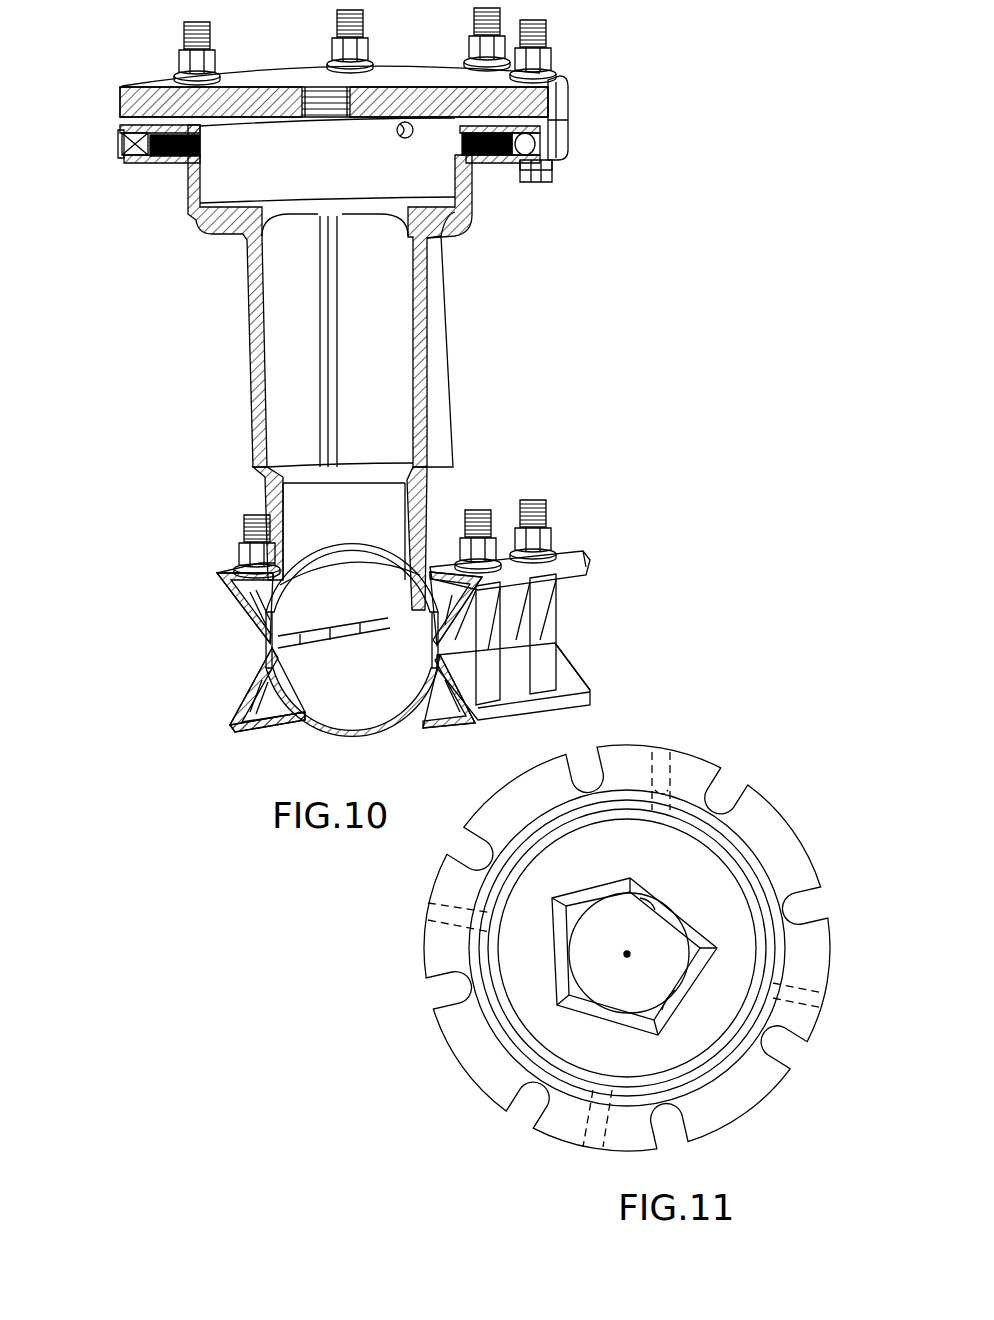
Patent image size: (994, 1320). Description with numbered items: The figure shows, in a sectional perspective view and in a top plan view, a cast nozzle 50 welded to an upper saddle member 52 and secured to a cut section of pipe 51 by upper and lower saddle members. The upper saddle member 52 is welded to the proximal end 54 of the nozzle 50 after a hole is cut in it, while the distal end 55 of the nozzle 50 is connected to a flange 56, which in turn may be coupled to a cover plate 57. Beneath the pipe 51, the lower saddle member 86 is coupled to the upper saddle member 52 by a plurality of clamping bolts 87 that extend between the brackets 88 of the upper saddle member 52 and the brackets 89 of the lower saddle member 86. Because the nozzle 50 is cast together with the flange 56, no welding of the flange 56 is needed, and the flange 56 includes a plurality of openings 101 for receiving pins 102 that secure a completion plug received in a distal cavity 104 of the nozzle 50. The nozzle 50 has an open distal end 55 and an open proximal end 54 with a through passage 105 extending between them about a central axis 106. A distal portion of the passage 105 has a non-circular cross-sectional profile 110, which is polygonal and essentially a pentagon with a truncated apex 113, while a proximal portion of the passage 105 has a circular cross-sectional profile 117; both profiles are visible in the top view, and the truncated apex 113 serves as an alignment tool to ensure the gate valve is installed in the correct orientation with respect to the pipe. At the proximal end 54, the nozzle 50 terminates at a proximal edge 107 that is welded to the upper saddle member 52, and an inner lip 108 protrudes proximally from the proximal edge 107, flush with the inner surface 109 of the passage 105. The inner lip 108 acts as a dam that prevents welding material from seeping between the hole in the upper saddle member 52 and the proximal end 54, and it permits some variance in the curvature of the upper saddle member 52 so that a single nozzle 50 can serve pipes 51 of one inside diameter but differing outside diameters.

In FIG. 10, the nozzle 50 is at (233, 318).
In FIG. 11, the nozzle 50 is at (388, 1100).
In FIG. 10, the pipe 51 is at (330, 726).
In FIG. 10, the upper saddle member 52 is at (450, 540).
In FIG. 10, the proximal end 54 is at (425, 512).
In FIG. 10, the distal end 55 is at (250, 232).
In FIG. 10, the flange 56 is at (568, 97).
In FIG. 11, the flange 56 is at (783, 863).
In FIG. 10, the cover plate 57 is at (392, 72).
In FIG. 10, the lower saddle member 86 is at (438, 700).
In FIG. 10, the clamping bolts 87 is at (533, 633).
In FIG. 10, the brackets 88 is at (585, 566).
In FIG. 10, the brackets 89 is at (587, 710).
In FIG. 10, the openings 101 is at (125, 140).
In FIG. 11, the openings 101 is at (680, 772).
In FIG. 10, the pins 102 is at (160, 160).
In FIG. 10, the distal cavity 104 is at (257, 153).
In FIG. 10, the passage 105 is at (345, 353).
In FIG. 11, the passage 105 is at (600, 932).
In FIG. 11, the central axis 106 is at (627, 954).
In FIG. 10, the proximal edge 107 is at (420, 622).
In FIG. 10, the inner lip 108 is at (433, 567).
In FIG. 10, the inner surface 109 is at (368, 518).
In FIG. 10, the non-circular cross-sectional profile 110 is at (298, 413).
In FIG. 11, the non-circular cross-sectional profile 110 is at (583, 1010).
In FIG. 11, the truncated apex 113 is at (663, 903).
In FIG. 10, the circular cross-sectional profile 117 is at (270, 560).
In FIG. 11, the circular cross-sectional profile 117 is at (667, 1003).